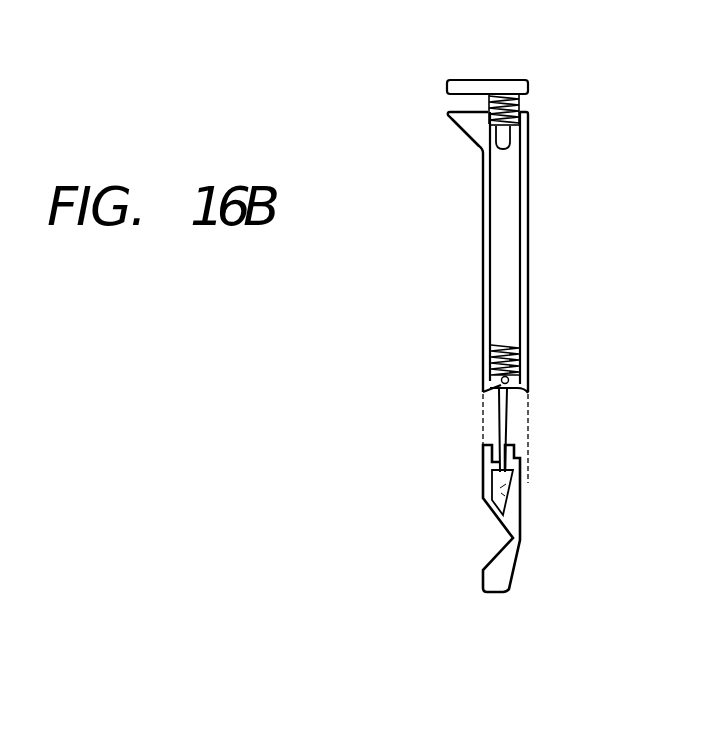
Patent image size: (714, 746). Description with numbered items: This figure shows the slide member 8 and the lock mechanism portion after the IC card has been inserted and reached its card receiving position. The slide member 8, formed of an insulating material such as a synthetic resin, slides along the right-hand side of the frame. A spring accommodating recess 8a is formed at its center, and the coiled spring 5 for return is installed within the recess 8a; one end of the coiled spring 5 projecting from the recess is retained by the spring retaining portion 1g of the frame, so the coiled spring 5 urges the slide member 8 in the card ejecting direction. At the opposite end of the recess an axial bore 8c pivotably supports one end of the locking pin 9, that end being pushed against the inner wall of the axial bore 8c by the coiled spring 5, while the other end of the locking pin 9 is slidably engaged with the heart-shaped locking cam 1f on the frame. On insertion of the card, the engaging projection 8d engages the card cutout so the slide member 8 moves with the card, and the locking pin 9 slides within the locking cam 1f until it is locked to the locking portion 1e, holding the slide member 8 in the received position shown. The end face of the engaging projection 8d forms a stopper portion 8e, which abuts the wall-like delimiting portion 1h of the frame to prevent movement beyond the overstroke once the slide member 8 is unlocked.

The wall-like delimiting portion 1h is at (465, 84).
The coiled spring 5 is at (521, 101).
The spring retaining portion 1g is at (505, 136).
The stopper portion 8e is at (476, 112).
The engaging projection 8d is at (468, 126).
The spring accommodating recess 8a is at (507, 248).
The slide member 8 is at (530, 306).
The locking pin 9 is at (508, 405).
The axial bore 8c is at (483, 393).
The locking portion 1e is at (483, 485).
The locking cam 1f is at (512, 518).